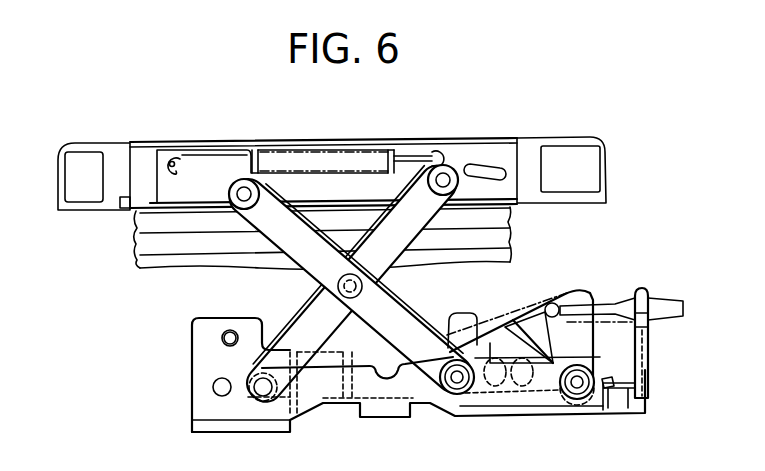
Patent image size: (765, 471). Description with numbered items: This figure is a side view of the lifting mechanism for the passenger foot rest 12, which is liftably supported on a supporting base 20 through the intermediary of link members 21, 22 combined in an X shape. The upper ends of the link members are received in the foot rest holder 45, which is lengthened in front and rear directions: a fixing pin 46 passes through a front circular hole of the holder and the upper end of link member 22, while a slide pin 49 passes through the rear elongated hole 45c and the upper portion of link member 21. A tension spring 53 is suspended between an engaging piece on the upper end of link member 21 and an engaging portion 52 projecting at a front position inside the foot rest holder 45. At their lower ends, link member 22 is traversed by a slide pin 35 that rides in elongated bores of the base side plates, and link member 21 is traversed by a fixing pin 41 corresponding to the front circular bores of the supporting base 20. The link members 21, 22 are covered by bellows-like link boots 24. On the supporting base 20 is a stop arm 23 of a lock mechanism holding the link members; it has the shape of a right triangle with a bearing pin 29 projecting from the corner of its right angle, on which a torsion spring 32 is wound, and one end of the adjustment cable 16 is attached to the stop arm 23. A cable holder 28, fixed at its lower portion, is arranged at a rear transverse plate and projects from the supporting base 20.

The passenger foot rest 12 is at (572, 122).
The adjustment cable 16 is at (604, 305).
The supporting base 20 is at (340, 406).
The link member 21 is at (292, 318).
The link member 22 is at (412, 306).
The stop arm 23 is at (500, 320).
The link boot 24 is at (130, 255).
The cable holder 28 is at (650, 350).
The bearing pin 29 is at (569, 408).
The torsion spring 32 is at (610, 377).
The slide pin 35 is at (453, 405).
The fixing pin 41 is at (263, 396).
The foot rest holder 45 is at (345, 143).
The elongated hole 45c is at (537, 132).
The fixing pin 46 is at (244, 192).
The slide pin 49 is at (451, 150).
The engaging portion 52 is at (187, 143).
The tension spring 53 is at (288, 146).